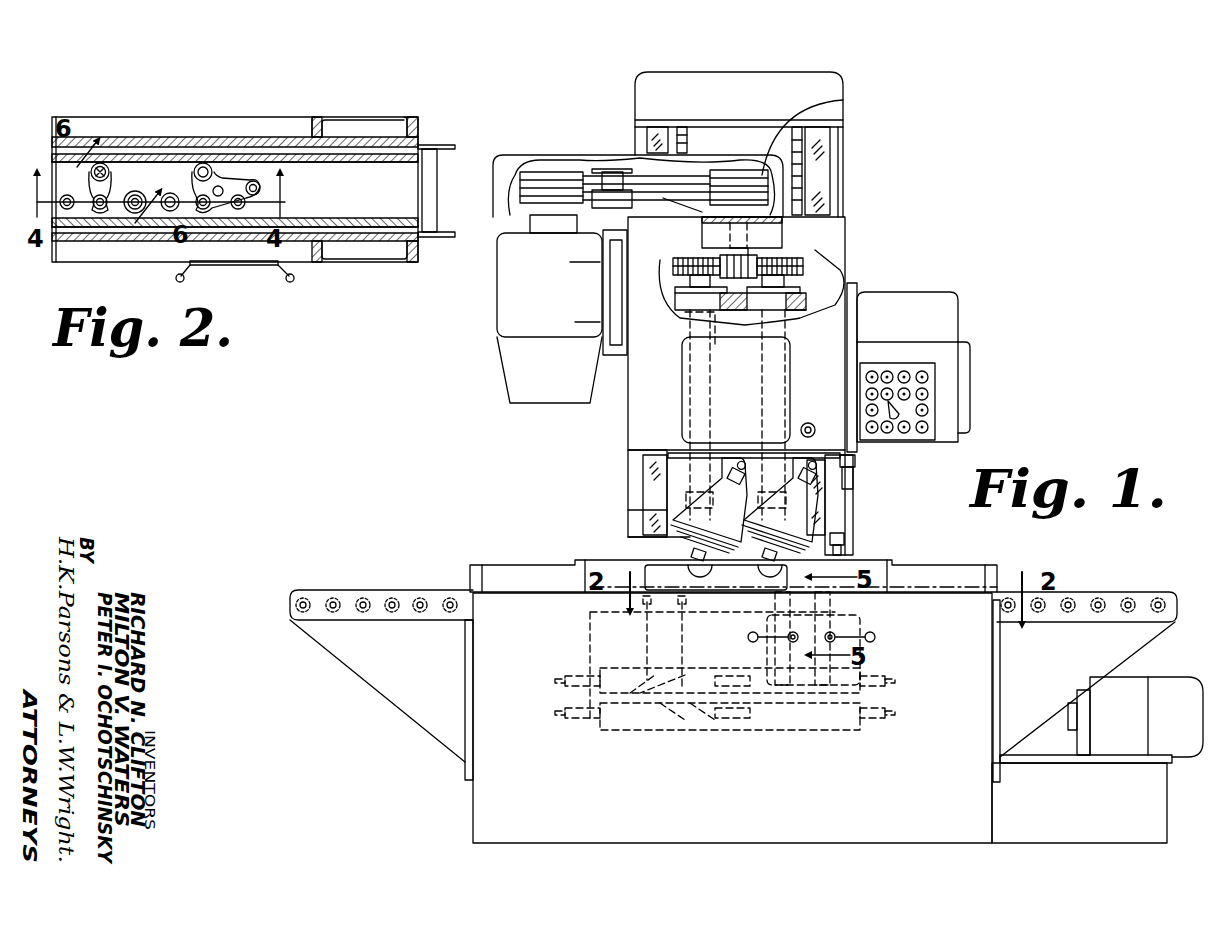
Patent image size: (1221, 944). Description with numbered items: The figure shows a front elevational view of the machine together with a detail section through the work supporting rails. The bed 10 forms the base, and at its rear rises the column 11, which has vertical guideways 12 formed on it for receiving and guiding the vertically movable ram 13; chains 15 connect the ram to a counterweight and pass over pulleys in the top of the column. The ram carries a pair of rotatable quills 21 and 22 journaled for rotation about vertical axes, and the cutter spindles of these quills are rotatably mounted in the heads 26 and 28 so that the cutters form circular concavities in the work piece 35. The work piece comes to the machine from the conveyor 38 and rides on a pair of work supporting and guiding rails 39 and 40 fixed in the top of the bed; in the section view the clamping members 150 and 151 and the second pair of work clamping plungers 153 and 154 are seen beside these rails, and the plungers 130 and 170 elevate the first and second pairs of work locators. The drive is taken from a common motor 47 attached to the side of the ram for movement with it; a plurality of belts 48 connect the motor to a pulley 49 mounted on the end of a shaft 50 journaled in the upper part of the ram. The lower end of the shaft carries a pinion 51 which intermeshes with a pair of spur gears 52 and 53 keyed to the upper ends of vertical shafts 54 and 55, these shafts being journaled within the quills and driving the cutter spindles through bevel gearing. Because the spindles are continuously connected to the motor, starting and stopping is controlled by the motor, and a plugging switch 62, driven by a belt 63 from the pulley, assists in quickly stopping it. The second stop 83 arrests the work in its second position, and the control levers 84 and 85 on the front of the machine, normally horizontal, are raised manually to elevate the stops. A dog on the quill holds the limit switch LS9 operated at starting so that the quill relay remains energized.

In FIG. 1, the bed 10 is at (480, 796).
In FIG. 1, the column 11 is at (845, 175).
In FIG. 1, the vertical guideways 12 is at (652, 145).
In FIG. 1, the ram 13 is at (846, 248).
In FIG. 1, the chains 15 is at (686, 142).
In FIG. 1, the quill 21 is at (828, 313).
In FIG. 1, the quill 22 is at (680, 308).
In FIG. 1, the head 26 is at (812, 515).
In FIG. 1, the head 28 is at (678, 511).
In FIG. 1, the work piece 35 is at (655, 564).
In FIG. 1, the conveyor 38 is at (376, 590).
In FIG. 2, the work supporting and guiding rail 39 is at (373, 163).
In FIG. 2, the work supporting and guiding rail 40 is at (323, 219).
In FIG. 1, the motor 47 is at (495, 300).
In FIG. 1, the belts 48 is at (590, 175).
In FIG. 1, the pulley 49 is at (843, 100).
In FIG. 1, the shaft 50 is at (795, 232).
In FIG. 1, the pinion 51 is at (722, 262).
In FIG. 1, the spur gear 52 is at (676, 262).
In FIG. 1, the spur gear 53 is at (805, 266).
In FIG. 1, the vertical shaft 54 is at (688, 340).
In FIG. 1, the vertical shaft 55 is at (788, 340).
In FIG. 1, the plugging switch 62 is at (612, 203).
In FIG. 1, the belt 63 is at (630, 160).
In FIG. 1, the second stop 83 is at (833, 604).
In FIG. 2, the control lever 84 is at (185, 280).
In FIG. 1, the control lever 84 is at (750, 640).
In FIG. 2, the control lever 85 is at (295, 280).
In FIG. 1, the control lever 85 is at (875, 639).
In FIG. 1, the plunger 130 is at (622, 666).
In FIG. 2, the clamping member 150 is at (103, 163).
In FIG. 2, the clamping member 151 is at (138, 192).
In FIG. 2, the work clamping plunger 153 is at (172, 192).
In FIG. 2, the work clamping plunger 154 is at (208, 163).
In FIG. 1, the plunger 170 is at (636, 732).
In FIG. 1, the limit switch LS9 is at (845, 470).